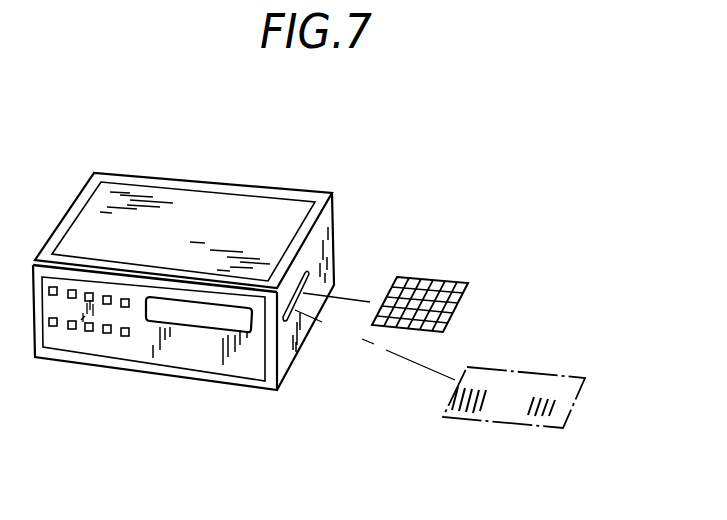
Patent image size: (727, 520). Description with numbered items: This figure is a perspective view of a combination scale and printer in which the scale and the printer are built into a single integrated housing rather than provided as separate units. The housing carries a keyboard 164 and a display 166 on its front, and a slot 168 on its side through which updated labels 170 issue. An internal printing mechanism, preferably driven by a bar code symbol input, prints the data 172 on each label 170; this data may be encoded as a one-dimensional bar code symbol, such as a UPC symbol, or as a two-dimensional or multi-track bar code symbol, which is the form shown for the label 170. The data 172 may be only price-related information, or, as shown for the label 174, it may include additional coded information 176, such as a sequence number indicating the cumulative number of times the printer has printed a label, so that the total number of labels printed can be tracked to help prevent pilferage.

The keyboard 164 is at (56, 326).
The display 166 is at (203, 322).
The slot 168 is at (297, 310).
The updated label 170 is at (466, 313).
The data 172 is at (448, 278).
The label 174 is at (467, 408).
The additional coded information 176 is at (553, 410).